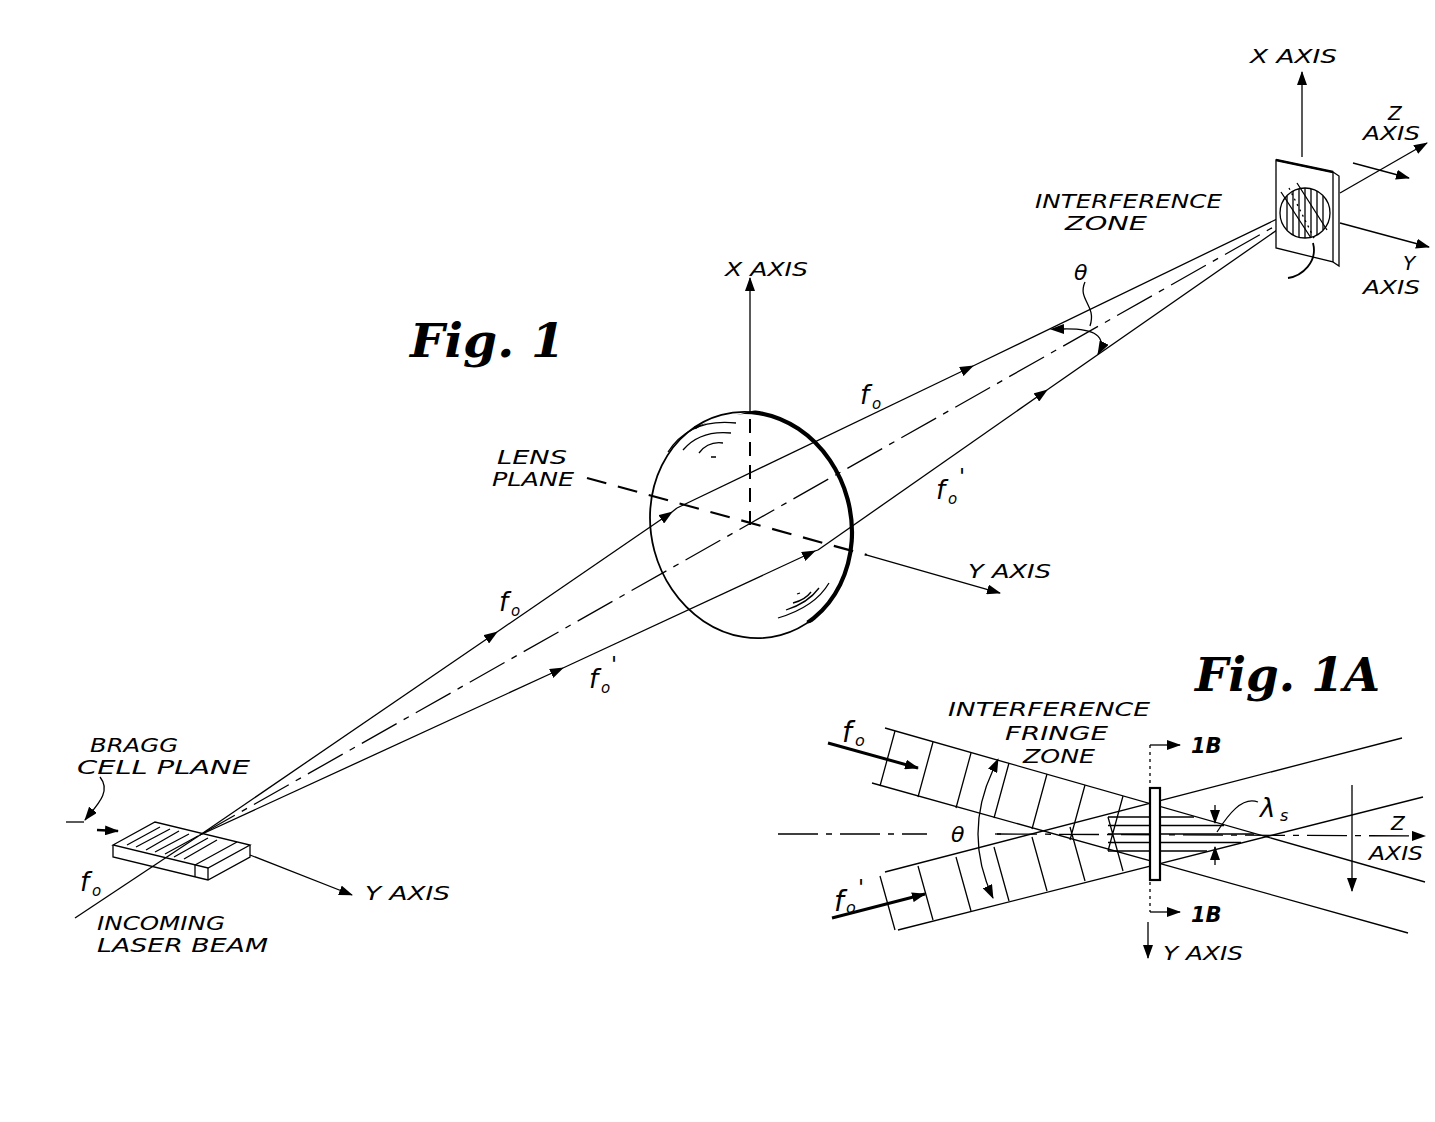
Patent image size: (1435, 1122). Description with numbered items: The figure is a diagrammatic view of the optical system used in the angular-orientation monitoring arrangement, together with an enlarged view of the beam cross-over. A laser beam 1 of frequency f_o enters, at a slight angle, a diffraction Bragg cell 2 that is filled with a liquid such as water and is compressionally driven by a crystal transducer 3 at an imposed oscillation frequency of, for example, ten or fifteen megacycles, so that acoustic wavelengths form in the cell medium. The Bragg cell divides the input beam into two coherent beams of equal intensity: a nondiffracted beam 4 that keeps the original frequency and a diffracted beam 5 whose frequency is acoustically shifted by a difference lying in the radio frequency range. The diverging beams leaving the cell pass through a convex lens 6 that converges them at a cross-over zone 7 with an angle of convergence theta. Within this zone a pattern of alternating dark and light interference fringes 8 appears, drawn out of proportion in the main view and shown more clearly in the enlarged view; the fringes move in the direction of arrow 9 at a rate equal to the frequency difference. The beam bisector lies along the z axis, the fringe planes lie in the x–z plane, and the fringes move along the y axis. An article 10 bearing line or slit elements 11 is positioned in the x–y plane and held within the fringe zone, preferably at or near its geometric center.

In FIG. 1, the laser beam 1 is at (125, 886).
In FIG. 1, the diffraction Bragg cell 2 is at (189, 808).
In FIG. 1, the crystal transducer 3 is at (253, 853).
In FIG. 1, the nondiffracted beam 4 is at (390, 702).
In FIG. 1A, the nondiffracted beam 4 is at (1148, 830).
In FIG. 1, the diffracted beam 5 is at (407, 742).
In FIG. 1A, the diffracted beam 5 is at (1151, 834).
In FIG. 1, the convex lens 6 is at (768, 624).
In FIG. 1, the cross-over zone 7 is at (1268, 217).
In FIG. 1A, the cross-over zone 7 is at (1122, 805).
In FIG. 1, the interference fringes 8 is at (1318, 190).
In FIG. 1A, the interference fringes 8 is at (1117, 834).
In FIG. 1, the arrow 9 is at (1388, 176).
In FIG. 1A, the arrow 9 is at (1354, 796).
In FIG. 1, the article 10 is at (1272, 173).
In FIG. 1A, the article 10 is at (1161, 792).
In FIG. 1, the line or slit elements 11 is at (1303, 275).